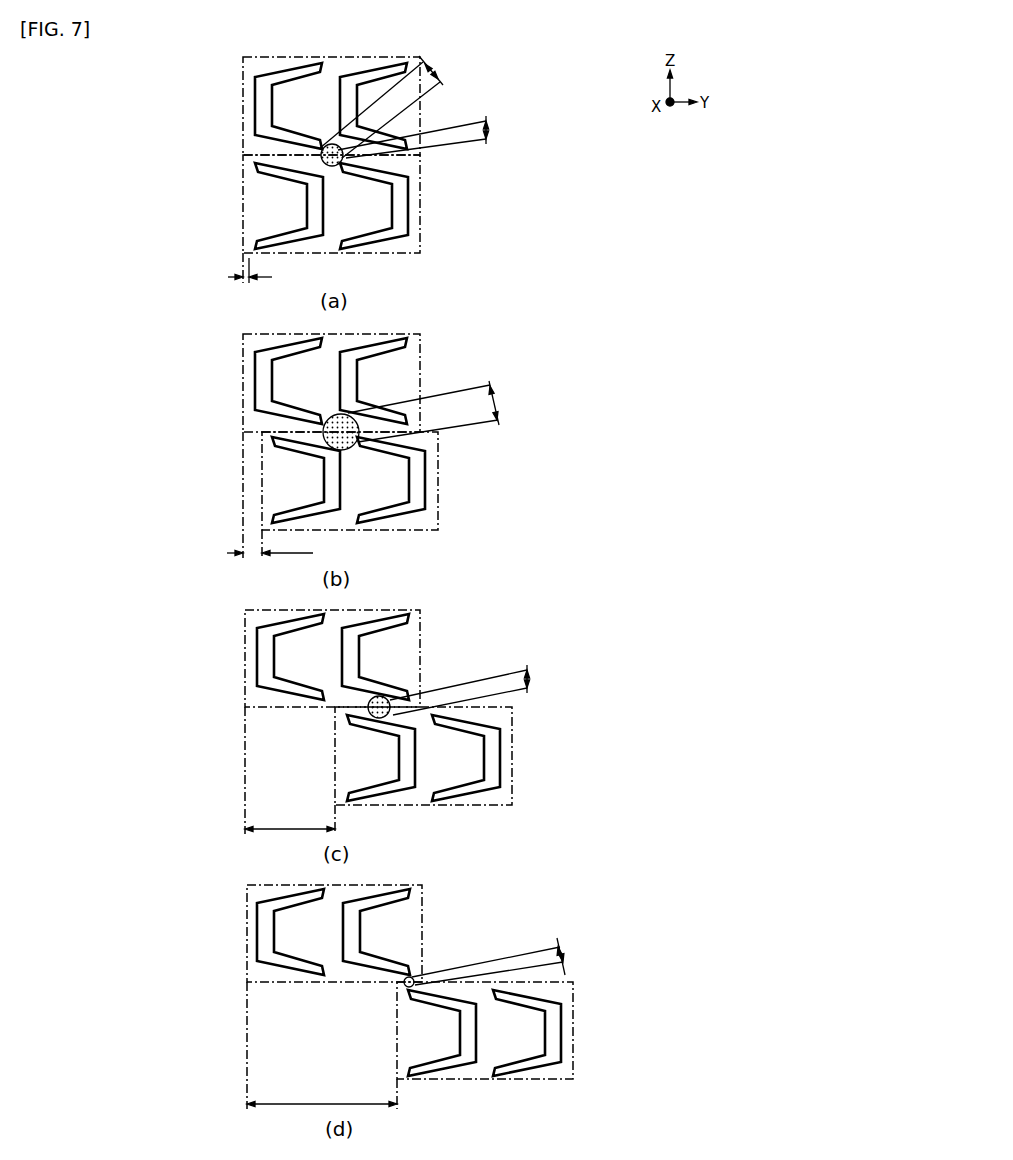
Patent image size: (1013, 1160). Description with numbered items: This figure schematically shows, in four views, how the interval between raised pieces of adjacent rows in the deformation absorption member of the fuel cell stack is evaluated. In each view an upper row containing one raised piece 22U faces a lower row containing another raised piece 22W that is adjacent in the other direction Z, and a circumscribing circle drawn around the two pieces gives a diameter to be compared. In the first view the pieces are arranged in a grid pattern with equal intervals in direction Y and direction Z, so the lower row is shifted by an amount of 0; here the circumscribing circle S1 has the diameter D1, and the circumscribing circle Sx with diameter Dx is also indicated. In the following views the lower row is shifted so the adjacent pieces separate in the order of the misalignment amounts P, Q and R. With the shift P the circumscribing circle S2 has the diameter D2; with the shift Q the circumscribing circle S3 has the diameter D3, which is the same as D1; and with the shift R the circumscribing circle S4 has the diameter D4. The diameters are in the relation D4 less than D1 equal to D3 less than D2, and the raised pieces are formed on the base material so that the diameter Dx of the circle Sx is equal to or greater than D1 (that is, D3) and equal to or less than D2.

The one raised piece 22U is at (322, 148).
The other raised piece 22W is at (307, 183).
The circumscribing circle Sx is at (325, 150).
The circumscribing circle S1 is at (325, 158).
The circumscribing circle S2 is at (275, 443).
The circumscribing circle S3 is at (370, 701).
The circumscribing circle S4 is at (405, 982).
The diameter of circumscribing circle Sx Dx is at (388, 105).
The diameter of circumscribing circle S1 D1 is at (424, 137).
The diameter of circumscribing circle S2 D2 is at (432, 411).
The diameter of circumscribing circle S3 D3 is at (500, 690).
The diameter of circumscribing circle S4 D4 is at (501, 961).
The zero offset 0 is at (250, 269).
The misalignment amount P is at (270, 543).
The misalignment amount Q is at (290, 820).
The misalignment amount R is at (322, 1095).